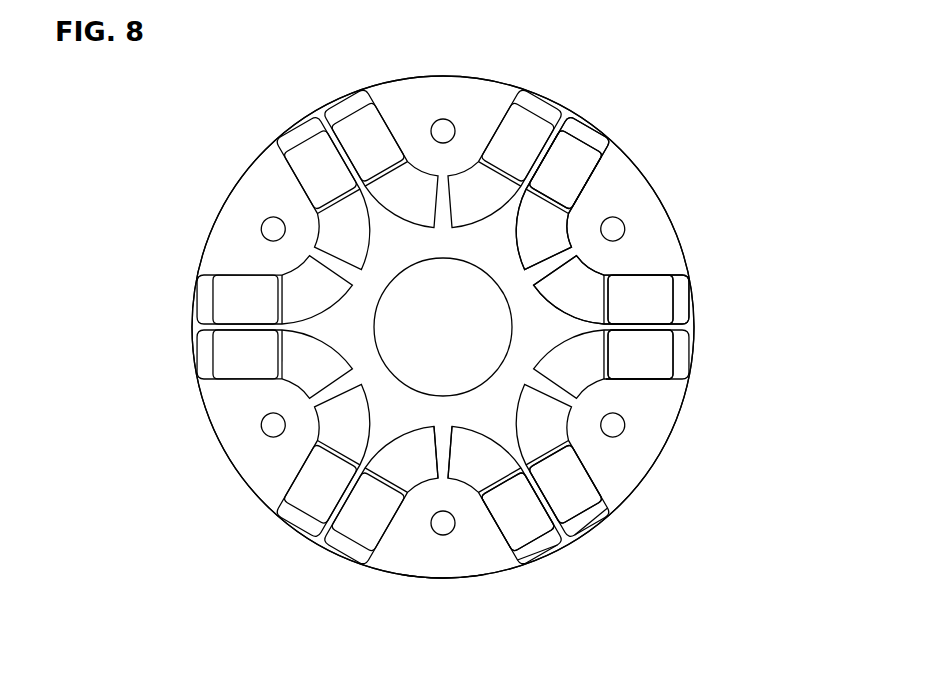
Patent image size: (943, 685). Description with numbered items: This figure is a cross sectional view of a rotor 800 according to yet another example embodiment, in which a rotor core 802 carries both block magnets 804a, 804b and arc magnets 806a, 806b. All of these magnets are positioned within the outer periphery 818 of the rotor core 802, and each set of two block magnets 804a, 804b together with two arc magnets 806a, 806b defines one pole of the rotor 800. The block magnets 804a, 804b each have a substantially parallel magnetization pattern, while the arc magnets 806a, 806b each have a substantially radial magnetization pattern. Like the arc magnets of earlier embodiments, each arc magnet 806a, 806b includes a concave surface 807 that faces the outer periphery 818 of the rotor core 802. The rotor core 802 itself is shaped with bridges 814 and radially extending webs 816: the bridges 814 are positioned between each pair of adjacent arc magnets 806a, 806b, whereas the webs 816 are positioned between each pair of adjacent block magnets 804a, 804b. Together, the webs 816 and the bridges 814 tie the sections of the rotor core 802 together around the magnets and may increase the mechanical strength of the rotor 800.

The rotor 800 is at (618, 45).
The rotor core 802 is at (640, 457).
The block magnet 804a is at (657, 295).
The block magnet 804b is at (577, 152).
The arc magnet 806a is at (587, 290).
The arc magnet 806b is at (550, 223).
The concave surface 807 is at (633, 380).
The bridge 814 is at (443, 473).
The radially extending web 816 is at (560, 528).
The outer periphery 818 is at (446, 582).